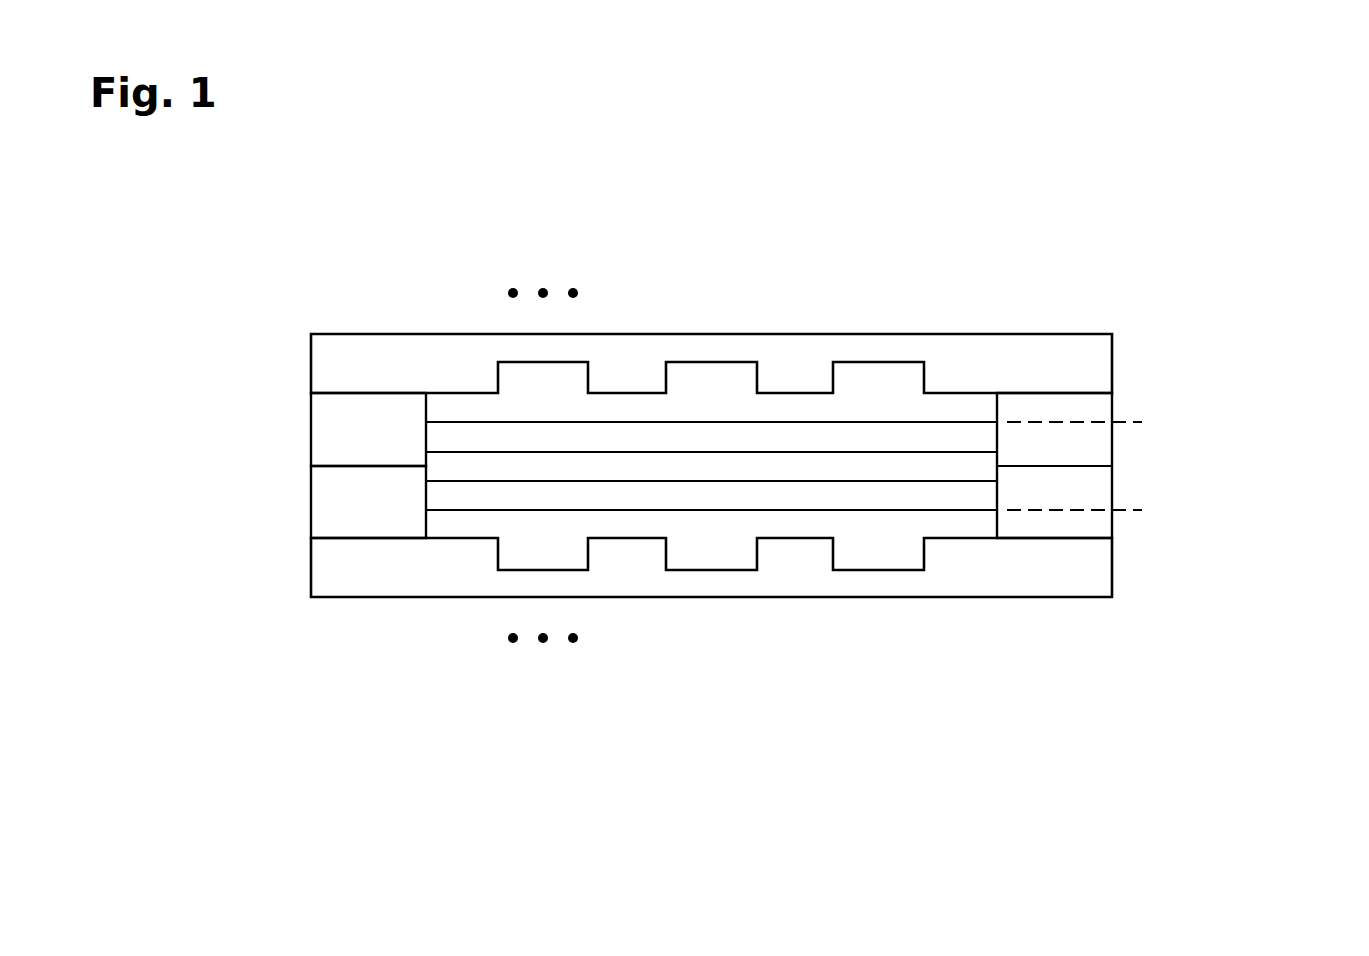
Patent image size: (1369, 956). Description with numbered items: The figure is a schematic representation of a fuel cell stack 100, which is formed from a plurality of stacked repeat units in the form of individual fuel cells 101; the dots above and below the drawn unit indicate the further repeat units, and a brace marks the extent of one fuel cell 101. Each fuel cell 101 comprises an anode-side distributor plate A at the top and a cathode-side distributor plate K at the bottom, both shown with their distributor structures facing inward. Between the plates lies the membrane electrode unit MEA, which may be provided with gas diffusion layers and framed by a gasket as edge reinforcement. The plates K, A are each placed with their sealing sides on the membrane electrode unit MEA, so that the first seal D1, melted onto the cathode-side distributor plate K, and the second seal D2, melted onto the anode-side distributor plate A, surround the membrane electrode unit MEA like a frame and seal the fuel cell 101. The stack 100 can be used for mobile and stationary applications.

The fuel cell stack 100 is at (779, 426).
The fuel cell 101 is at (1236, 334).
The anode-side distributor plate A is at (1052, 353).
The cathode-side distributor plate K is at (1051, 580).
The first seal D1 is at (328, 428).
The second seal D2 is at (328, 501).
The membrane electrode unit MEA is at (1126, 422).